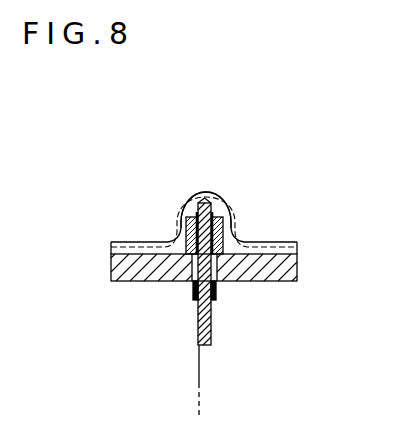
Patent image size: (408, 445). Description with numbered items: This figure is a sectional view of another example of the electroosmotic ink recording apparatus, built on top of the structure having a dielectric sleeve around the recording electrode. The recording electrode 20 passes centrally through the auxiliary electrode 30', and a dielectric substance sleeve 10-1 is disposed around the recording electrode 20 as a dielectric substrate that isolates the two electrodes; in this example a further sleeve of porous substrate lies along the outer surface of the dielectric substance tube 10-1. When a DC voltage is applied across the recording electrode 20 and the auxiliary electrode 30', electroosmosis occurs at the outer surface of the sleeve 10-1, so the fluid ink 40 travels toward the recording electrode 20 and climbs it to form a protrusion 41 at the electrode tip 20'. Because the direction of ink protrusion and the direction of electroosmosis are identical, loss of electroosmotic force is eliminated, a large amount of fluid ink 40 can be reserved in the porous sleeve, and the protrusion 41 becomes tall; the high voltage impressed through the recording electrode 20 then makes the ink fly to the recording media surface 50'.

The recording media surface 50' is at (238, 92).
The auxiliary electrode 30' is at (180, 267).
The fluid ink 40 is at (140, 246).
The fluid ink protrusion 41 is at (188, 198).
The recording electrode tip 20' is at (214, 173).
The recording electrode 20 is at (231, 309).
The dielectric substance sleeve 10-1 is at (214, 212).